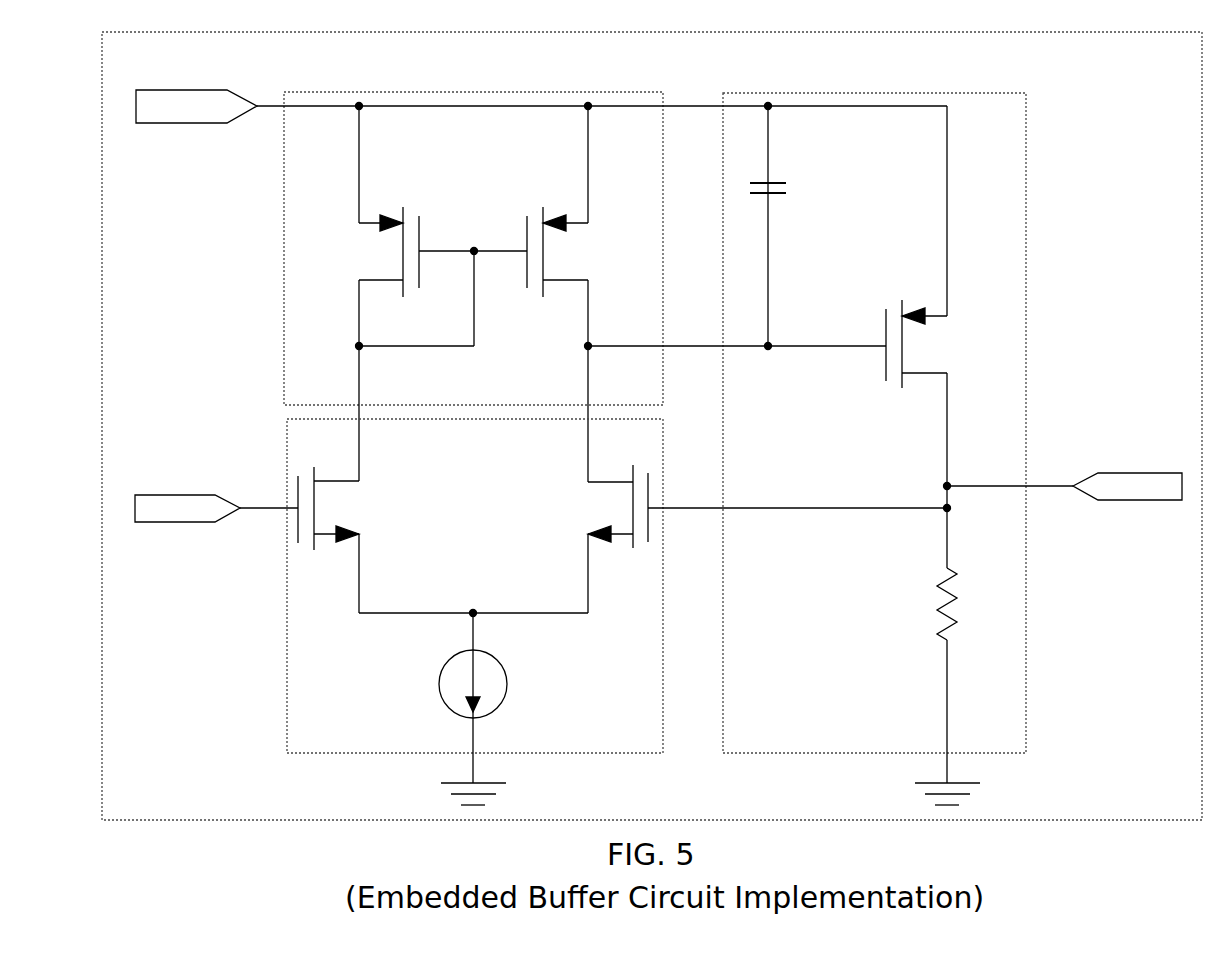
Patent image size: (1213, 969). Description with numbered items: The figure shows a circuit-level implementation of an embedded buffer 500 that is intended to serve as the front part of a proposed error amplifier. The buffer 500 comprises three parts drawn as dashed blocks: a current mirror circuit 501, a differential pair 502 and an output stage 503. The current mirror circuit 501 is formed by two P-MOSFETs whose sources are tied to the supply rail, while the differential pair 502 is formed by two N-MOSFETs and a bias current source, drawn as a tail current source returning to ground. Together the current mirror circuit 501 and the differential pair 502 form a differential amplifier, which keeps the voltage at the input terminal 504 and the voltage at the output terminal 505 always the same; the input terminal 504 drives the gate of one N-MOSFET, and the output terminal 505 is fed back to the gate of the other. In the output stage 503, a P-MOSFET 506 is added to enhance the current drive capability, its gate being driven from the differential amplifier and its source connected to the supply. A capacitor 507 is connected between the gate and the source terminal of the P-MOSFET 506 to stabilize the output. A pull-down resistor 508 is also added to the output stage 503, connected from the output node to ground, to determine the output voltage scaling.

The buffer 500 is at (676, 55).
The current mirror circuit 501 is at (276, 402).
The differential pair 502 is at (287, 753).
The output stage 503 is at (1026, 94).
The input terminal 504 is at (170, 538).
The output terminal 505 is at (1148, 471).
The P-MOSFET 506 is at (868, 376).
The capacitor 507 is at (828, 208).
The pull-down resistor 508 is at (1006, 646).